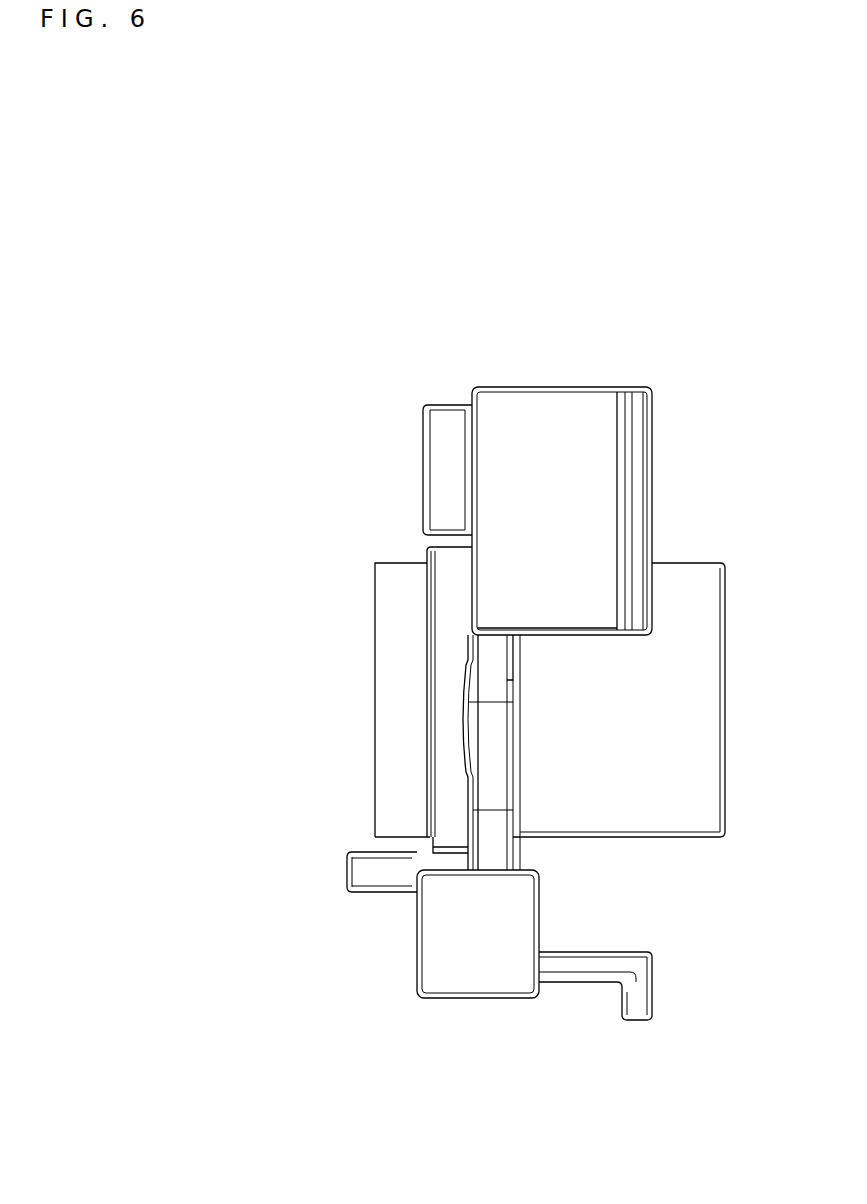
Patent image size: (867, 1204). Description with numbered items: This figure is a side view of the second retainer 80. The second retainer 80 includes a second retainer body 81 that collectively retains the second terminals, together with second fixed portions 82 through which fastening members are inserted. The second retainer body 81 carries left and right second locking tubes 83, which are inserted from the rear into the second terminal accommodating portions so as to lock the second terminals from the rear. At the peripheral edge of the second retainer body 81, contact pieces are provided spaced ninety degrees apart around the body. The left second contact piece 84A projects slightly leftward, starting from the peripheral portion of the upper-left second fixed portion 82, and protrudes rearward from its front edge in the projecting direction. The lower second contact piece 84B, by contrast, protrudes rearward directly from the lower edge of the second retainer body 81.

The second retainer 80 is at (528, 282).
The second retainer body 81 is at (497, 691).
The second fixed portion 82 is at (443, 459).
The second locking tube 83 is at (392, 632).
The left second contact piece 84A is at (637, 483).
The lower second contact piece 84B is at (637, 972).